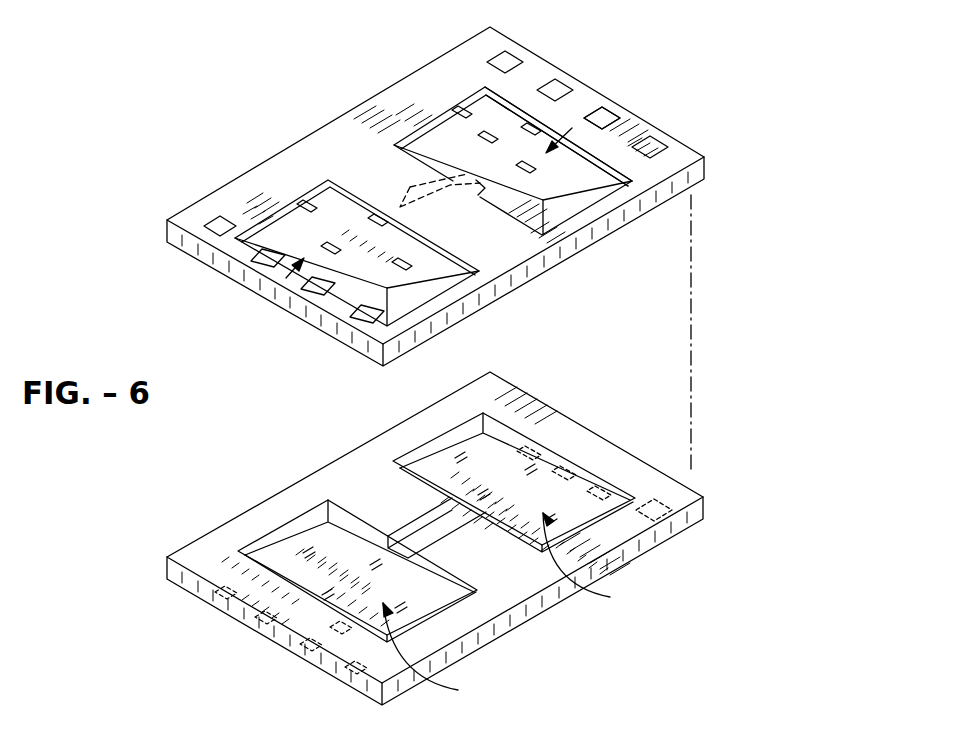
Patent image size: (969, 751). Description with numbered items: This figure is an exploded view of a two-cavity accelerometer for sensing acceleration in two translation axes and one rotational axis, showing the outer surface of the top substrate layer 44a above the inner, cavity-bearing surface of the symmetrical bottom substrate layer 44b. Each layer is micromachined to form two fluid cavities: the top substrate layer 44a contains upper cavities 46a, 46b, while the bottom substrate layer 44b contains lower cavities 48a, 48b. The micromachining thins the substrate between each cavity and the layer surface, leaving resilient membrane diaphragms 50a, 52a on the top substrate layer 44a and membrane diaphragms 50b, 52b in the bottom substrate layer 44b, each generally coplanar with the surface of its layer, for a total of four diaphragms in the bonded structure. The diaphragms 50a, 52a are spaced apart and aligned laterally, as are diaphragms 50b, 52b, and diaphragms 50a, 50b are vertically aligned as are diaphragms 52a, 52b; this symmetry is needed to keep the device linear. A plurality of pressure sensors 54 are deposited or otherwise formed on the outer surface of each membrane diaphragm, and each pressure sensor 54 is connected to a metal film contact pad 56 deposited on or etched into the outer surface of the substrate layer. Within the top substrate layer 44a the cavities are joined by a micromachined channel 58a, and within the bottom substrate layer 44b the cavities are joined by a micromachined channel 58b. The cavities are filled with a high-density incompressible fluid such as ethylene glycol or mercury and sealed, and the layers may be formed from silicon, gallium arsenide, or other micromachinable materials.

The top substrate layer 44a is at (705, 172).
The bottom substrate layer 44b is at (703, 510).
The upper cavity 46a is at (290, 285).
The upper cavity 46b is at (567, 137).
The lower cavity 48a is at (441, 654).
The lower cavity 48b is at (600, 562).
The membrane diaphragm 50a is at (287, 210).
The membrane diaphragm 50b is at (288, 567).
The membrane diaphragm 52a is at (447, 110).
The membrane diaphragm 52b is at (443, 470).
The pressure sensor 54 is at (510, 103).
The metal film contact pad 56 is at (643, 143).
The micromachined channel 58a is at (422, 210).
The micromachined channel 58b is at (430, 527).